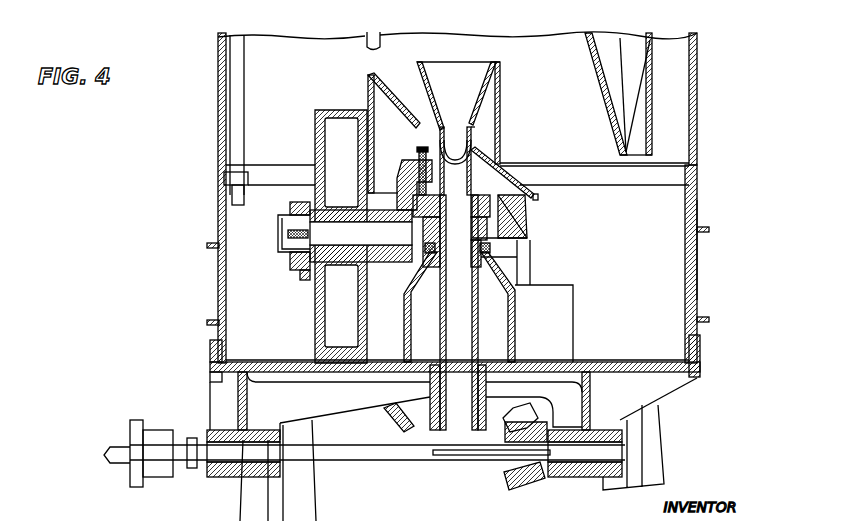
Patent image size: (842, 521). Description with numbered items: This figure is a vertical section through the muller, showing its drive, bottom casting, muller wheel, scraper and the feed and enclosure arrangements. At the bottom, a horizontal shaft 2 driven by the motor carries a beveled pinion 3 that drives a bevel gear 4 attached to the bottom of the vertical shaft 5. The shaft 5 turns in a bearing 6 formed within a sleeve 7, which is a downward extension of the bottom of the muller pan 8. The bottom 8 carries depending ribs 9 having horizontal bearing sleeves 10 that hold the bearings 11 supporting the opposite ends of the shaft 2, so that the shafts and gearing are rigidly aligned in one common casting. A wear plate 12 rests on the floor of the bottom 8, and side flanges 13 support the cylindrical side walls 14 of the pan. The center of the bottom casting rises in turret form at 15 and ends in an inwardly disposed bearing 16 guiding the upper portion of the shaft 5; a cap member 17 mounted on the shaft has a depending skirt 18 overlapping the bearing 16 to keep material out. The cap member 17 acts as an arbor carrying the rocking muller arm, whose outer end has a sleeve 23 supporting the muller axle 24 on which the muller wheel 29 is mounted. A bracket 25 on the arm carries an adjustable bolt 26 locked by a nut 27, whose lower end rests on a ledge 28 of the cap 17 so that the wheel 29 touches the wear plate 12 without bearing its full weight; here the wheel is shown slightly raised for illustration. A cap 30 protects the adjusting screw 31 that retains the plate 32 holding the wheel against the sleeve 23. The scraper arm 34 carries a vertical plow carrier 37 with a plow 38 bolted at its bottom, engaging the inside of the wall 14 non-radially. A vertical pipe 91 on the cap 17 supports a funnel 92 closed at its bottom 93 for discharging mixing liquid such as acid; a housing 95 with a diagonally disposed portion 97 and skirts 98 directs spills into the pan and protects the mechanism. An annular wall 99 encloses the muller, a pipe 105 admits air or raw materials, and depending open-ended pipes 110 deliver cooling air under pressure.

The shaft 2 is at (357, 458).
The beveled pinion 3 is at (187, 58).
The bevel gear 4 is at (383, 421).
The shaft 5 is at (466, 317).
The bearing 6 is at (430, 383).
The sleeve 7 is at (480, 388).
The muller pan bottom 8 is at (303, 370).
The depending ribs 9 is at (247, 407).
The horizontal bearing sleeves 10 is at (240, 477).
The bearings 11 is at (222, 475).
The wear plate 12 is at (640, 360).
The side flanges 13 is at (702, 353).
The cylindrical side walls 14 is at (532, 72).
The turret 15 is at (515, 318).
The bearing 16 is at (488, 258).
The cap member 17 is at (487, 213).
The depending skirt 18 is at (488, 248).
The sleeve 23 is at (390, 265).
The muller axle 24 is at (375, 234).
The bracket 25 is at (397, 170).
The adjustable bolt 26 is at (424, 150).
The nut 27 is at (418, 150).
The ledge 28 is at (424, 213).
The muller wheel 29 is at (315, 133).
The cap 30 is at (280, 245).
The adjusting screw 31 is at (296, 234).
The plate 32 is at (306, 214).
The scraper arm 34 is at (522, 228).
The vertical plow carrier 37 is at (517, 274).
The plow 38 is at (568, 313).
The vertically disposed pipe 91 is at (475, 155).
The funnel 92 is at (474, 105).
The closed bottom of funnel 93 is at (458, 152).
The housing 95 is at (502, 130).
The diagonally disposed portion 97 is at (520, 182).
The skirts 98 is at (368, 97).
The annular wall 99 is at (698, 128).
The pipe 105 is at (600, 50).
The depending open-ended pipes 110 is at (245, 64).